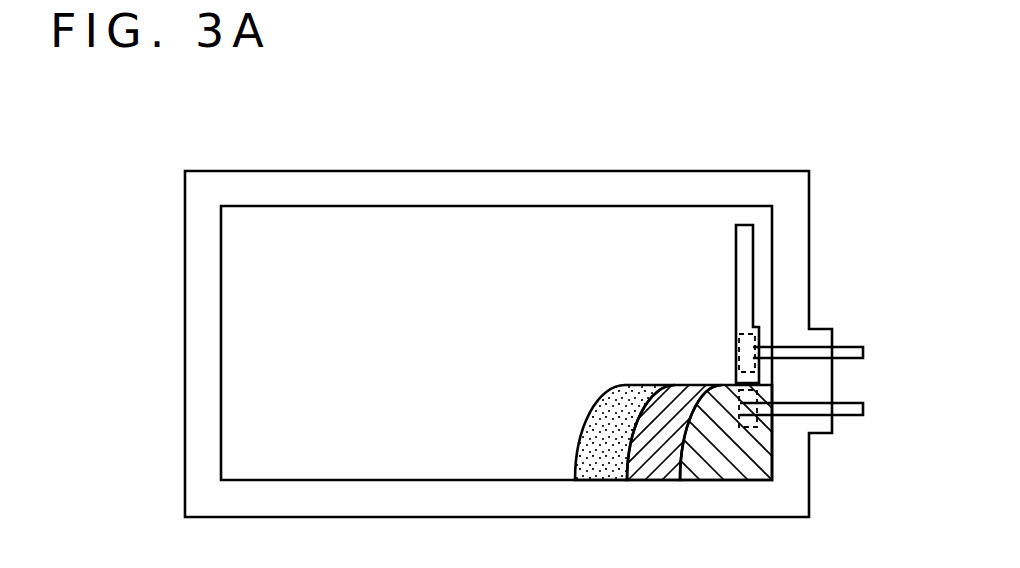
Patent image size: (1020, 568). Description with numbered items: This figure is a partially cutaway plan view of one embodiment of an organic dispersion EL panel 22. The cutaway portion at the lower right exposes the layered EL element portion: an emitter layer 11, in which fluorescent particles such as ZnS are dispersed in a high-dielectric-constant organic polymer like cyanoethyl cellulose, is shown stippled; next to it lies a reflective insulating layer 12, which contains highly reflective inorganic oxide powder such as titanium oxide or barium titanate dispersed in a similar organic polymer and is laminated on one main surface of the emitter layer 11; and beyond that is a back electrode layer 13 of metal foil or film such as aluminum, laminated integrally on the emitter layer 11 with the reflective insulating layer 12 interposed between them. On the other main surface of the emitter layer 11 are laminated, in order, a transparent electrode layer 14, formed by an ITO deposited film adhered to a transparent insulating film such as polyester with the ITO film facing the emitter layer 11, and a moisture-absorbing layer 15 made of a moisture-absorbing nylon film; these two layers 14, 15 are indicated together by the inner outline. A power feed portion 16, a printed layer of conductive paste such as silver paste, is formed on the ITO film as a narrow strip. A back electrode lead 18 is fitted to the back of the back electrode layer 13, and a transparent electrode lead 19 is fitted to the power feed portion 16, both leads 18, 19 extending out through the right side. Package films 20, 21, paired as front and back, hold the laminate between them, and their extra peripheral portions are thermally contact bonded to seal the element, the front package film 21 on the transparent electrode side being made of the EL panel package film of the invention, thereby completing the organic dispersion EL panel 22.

The emitter layer 11 is at (597, 467).
The reflective insulating layer 12 is at (667, 473).
The back electrode layer 13 is at (742, 473).
The transparent electrode layer 14 is at (496, 298).
The moisture-absorbing layer 15 is at (393, 218).
The power feed portion 16 is at (740, 252).
The back electrode lead 18 is at (843, 410).
The transparent electrode lead 19 is at (843, 352).
The package film 20 is at (785, 188).
The package film 21 is at (551, 320).
The organic dispersion EL panel 22 is at (634, 138).